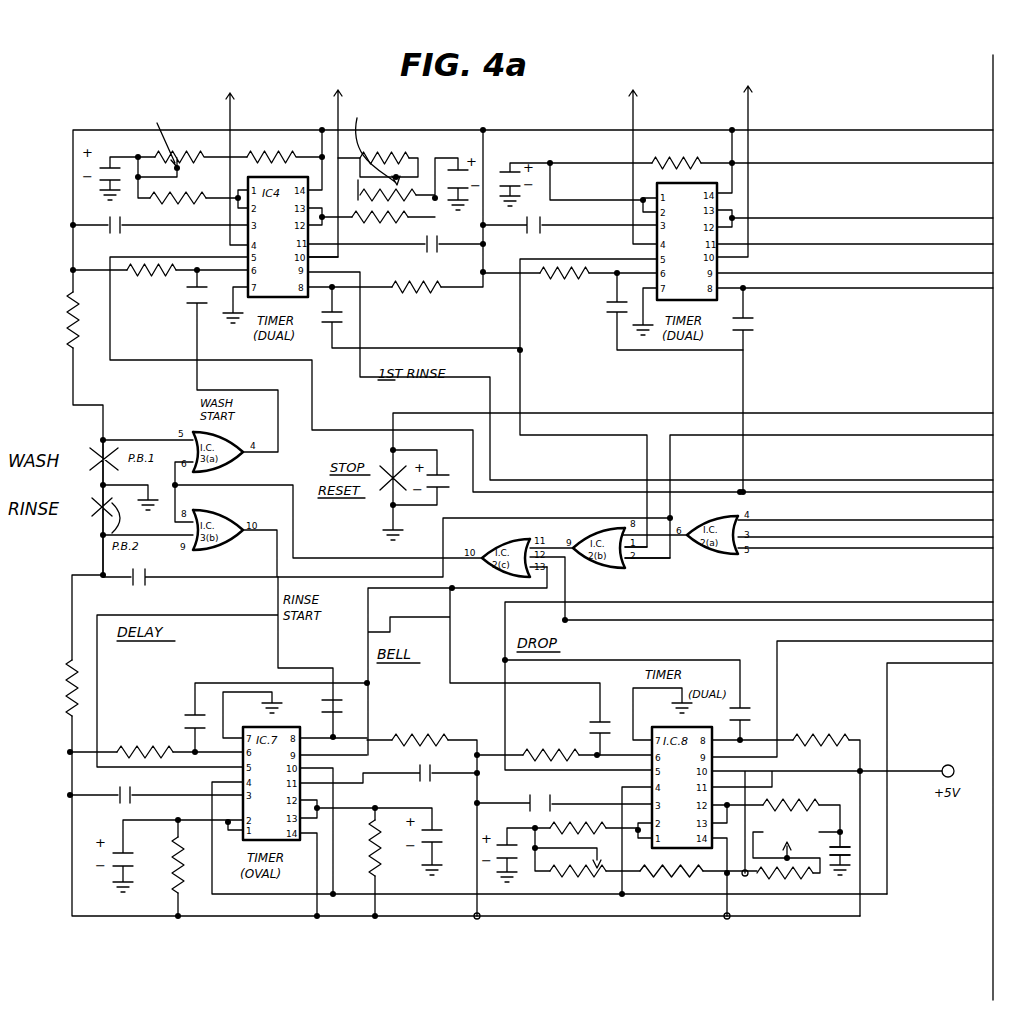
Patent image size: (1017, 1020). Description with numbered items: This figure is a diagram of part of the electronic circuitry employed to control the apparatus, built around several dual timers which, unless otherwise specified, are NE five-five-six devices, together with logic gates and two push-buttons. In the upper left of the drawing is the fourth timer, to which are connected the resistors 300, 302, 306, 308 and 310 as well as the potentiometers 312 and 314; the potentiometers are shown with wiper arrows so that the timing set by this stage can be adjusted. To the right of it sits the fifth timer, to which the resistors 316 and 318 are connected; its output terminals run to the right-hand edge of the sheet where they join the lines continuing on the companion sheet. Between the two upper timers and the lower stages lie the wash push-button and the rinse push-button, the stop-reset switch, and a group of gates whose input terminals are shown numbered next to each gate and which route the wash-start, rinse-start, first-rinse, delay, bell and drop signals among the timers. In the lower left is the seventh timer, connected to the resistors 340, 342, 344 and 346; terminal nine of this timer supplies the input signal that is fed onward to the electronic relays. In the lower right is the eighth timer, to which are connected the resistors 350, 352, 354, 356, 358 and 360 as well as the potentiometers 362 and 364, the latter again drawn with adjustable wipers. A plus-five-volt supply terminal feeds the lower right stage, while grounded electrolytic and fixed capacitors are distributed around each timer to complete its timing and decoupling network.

The resistor 300 is at (166, 266).
The resistor 302 is at (178, 208).
The resistor 306 is at (381, 149).
The resistor 308 is at (388, 222).
The resistor 310 is at (413, 292).
The potentiometer 312 is at (157, 123).
The potentiometer 314 is at (388, 152).
The resistor 316 is at (565, 280).
The resistor 318 is at (684, 156).
The resistor 340 is at (175, 850).
The resistor 342 is at (158, 746).
The resistor 344 is at (430, 734).
The resistor 346 is at (371, 844).
The resistor 350 is at (590, 822).
The resistor 352 is at (555, 748).
The resistor 354 is at (832, 736).
The resistor 356 is at (812, 790).
The resistor 358 is at (790, 880).
The resistor 360 is at (676, 880).
The potentiometer 362 is at (585, 878).
The potentiometer 364 is at (842, 820).